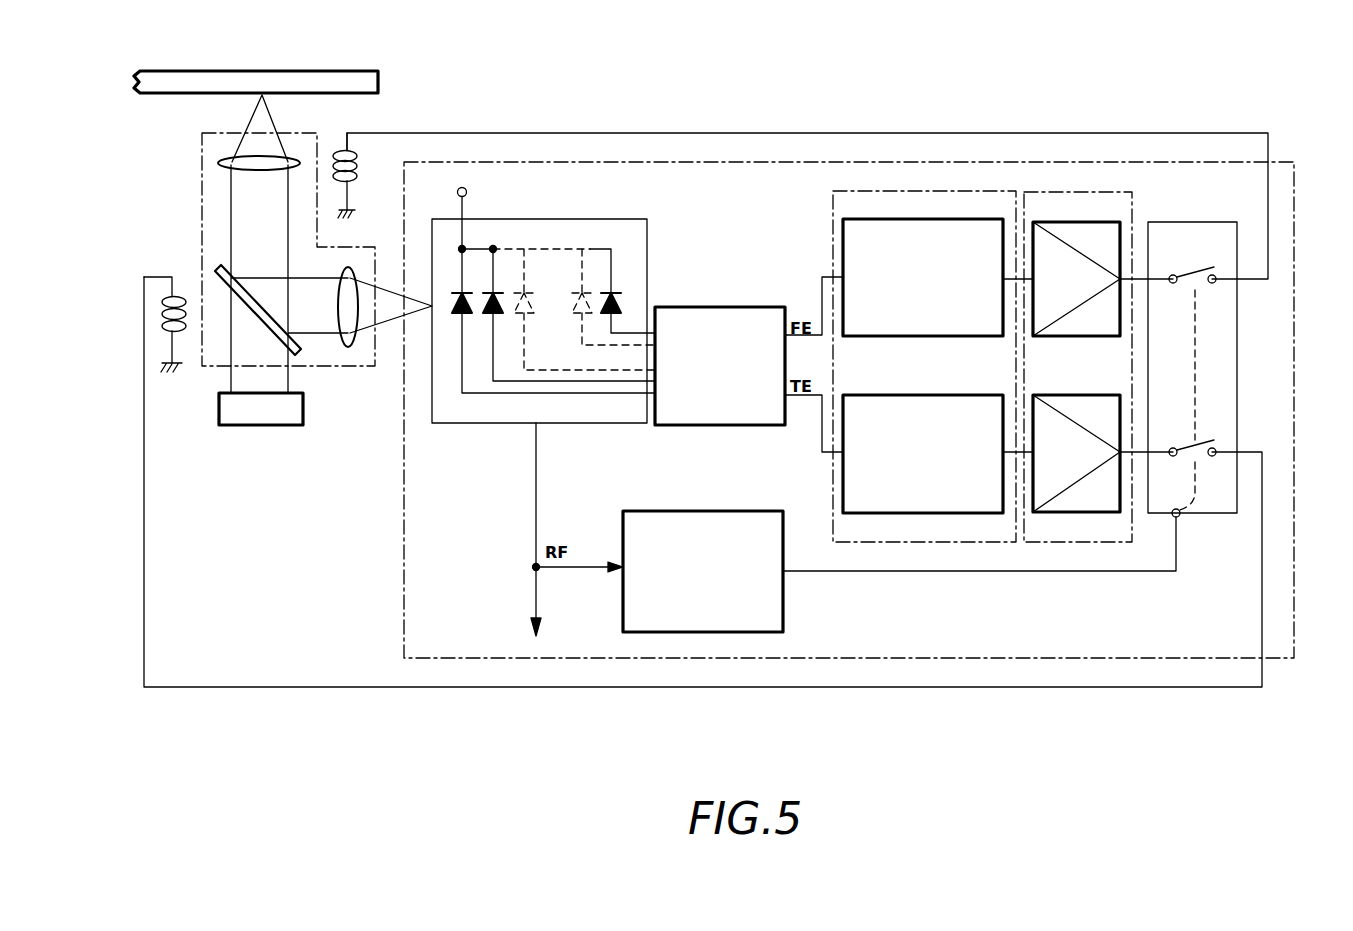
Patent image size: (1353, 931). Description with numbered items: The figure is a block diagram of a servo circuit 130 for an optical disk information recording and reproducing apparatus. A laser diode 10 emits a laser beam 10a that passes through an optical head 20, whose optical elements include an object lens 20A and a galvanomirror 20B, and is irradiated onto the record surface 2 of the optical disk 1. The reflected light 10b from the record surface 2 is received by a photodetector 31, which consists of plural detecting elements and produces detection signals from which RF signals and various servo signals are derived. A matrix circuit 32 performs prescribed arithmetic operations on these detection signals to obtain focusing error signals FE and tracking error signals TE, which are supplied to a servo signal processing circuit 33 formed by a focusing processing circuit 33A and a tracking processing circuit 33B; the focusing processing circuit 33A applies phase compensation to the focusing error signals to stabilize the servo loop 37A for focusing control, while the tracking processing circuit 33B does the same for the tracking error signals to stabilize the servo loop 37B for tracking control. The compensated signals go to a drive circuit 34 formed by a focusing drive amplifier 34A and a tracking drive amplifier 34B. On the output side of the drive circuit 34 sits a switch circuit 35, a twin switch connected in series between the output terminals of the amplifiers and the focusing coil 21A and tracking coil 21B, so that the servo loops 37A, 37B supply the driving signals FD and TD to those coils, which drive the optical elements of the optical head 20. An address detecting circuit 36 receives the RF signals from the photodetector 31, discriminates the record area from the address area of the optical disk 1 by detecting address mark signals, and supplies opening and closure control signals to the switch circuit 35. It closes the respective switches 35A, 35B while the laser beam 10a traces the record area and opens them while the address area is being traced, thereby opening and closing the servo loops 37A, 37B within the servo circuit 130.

The optical disk 1 is at (365, 80).
The record surface 2 is at (200, 95).
The laser diode 10 is at (258, 425).
The laser beam 10a is at (258, 120).
The reflected light 10b is at (393, 340).
The optical head 20 is at (196, 180).
The object lens 20A is at (243, 168).
The galvanomirror 20B is at (244, 300).
The focusing coil 21A is at (356, 160).
The tracking coil 21B is at (163, 345).
The photodetector 31 is at (490, 424).
The matrix circuit 32 is at (735, 425).
The servo signal processing circuit 33 is at (833, 232).
The focusing processing circuit 33A is at (925, 327).
The tracking processing circuit 33B is at (928, 402).
The drive circuit 34 is at (1135, 210).
The focusing drive amplifier 34A is at (1062, 327).
The tracking drive amplifier 34B is at (1088, 408).
The switch circuit 35 is at (1212, 516).
The focusing switch 35A is at (1185, 273).
The tracking switch 35B is at (1178, 440).
The address detecting circuit 36 is at (785, 605).
The servo loop for focusing control 37A is at (930, 132).
The servo loop for tracking control 37B is at (825, 688).
The servo circuit 130 is at (403, 556).